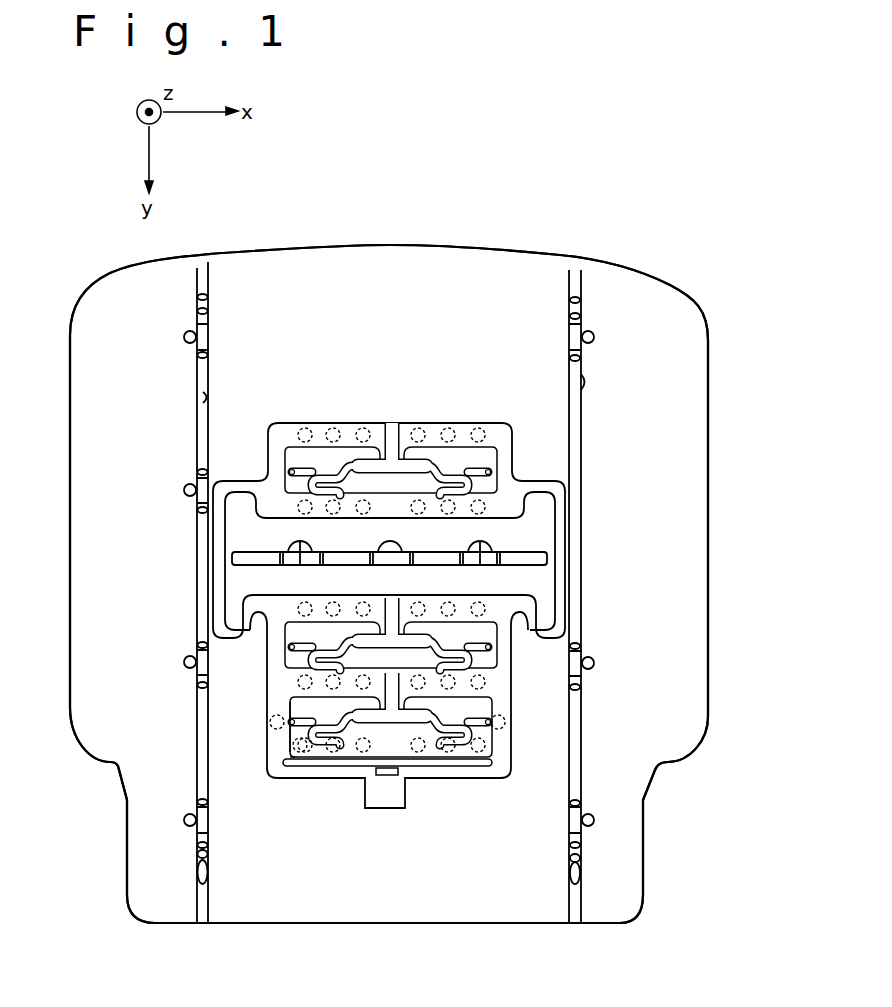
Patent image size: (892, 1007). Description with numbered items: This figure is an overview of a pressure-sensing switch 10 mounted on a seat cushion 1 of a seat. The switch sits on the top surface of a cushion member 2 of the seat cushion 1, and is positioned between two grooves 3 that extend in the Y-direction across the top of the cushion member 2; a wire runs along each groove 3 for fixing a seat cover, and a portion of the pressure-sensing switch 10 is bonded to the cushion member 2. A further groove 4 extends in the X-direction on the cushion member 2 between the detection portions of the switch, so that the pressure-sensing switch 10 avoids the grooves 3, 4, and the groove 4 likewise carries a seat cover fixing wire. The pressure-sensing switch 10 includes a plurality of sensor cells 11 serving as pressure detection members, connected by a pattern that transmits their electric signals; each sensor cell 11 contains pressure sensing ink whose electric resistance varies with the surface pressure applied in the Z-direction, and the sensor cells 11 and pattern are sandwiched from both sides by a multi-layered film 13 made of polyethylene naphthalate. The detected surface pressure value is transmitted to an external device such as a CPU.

The seat cushion 1 is at (708, 302).
The cushion member 2 is at (693, 347).
The groove 3 is at (197, 387).
The groove 4 is at (545, 560).
The pressure-sensing switch 10 is at (380, 420).
The sensor cell 11 is at (301, 740).
The multi-layered film 13 is at (279, 752).